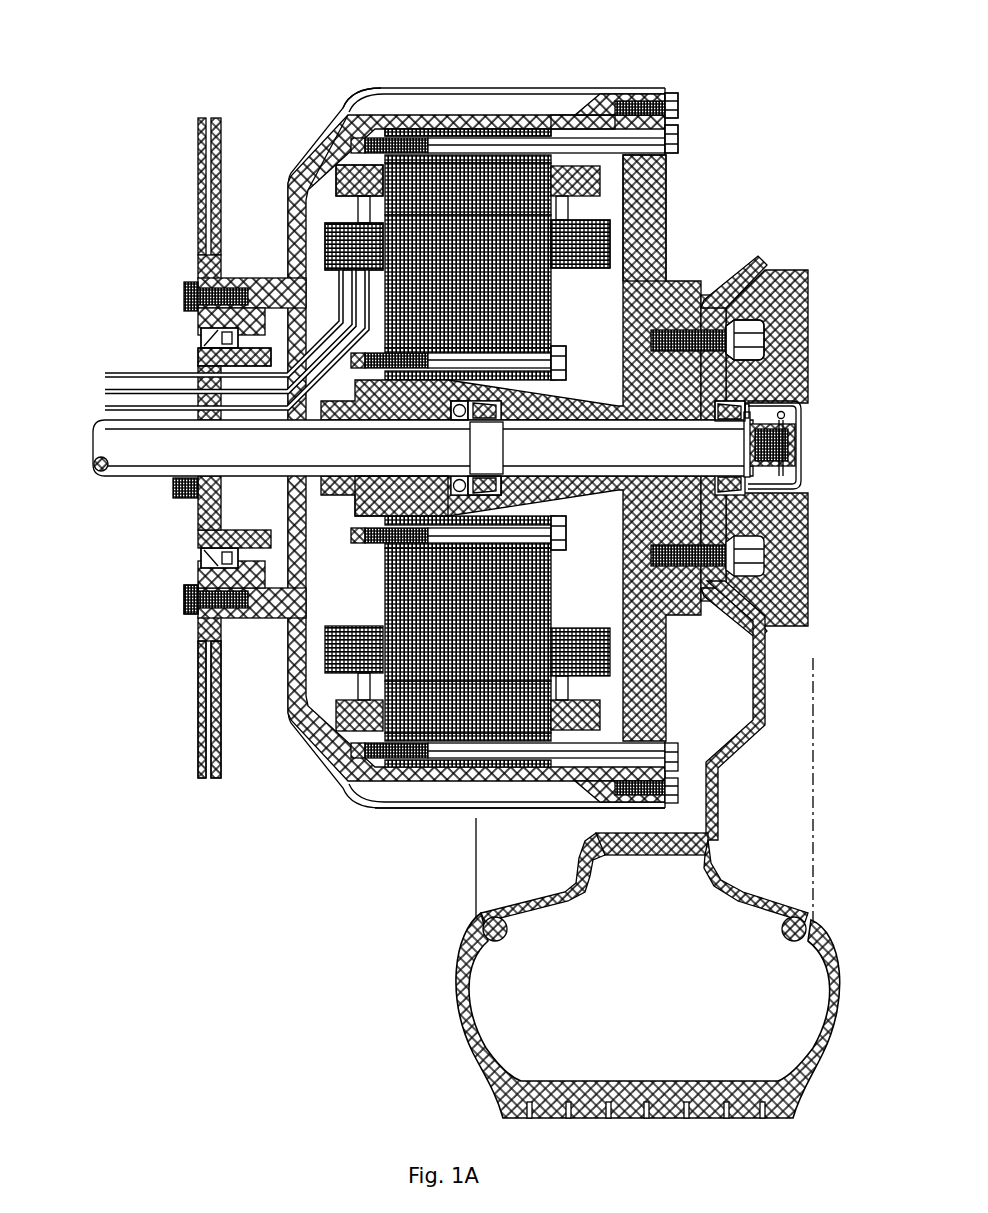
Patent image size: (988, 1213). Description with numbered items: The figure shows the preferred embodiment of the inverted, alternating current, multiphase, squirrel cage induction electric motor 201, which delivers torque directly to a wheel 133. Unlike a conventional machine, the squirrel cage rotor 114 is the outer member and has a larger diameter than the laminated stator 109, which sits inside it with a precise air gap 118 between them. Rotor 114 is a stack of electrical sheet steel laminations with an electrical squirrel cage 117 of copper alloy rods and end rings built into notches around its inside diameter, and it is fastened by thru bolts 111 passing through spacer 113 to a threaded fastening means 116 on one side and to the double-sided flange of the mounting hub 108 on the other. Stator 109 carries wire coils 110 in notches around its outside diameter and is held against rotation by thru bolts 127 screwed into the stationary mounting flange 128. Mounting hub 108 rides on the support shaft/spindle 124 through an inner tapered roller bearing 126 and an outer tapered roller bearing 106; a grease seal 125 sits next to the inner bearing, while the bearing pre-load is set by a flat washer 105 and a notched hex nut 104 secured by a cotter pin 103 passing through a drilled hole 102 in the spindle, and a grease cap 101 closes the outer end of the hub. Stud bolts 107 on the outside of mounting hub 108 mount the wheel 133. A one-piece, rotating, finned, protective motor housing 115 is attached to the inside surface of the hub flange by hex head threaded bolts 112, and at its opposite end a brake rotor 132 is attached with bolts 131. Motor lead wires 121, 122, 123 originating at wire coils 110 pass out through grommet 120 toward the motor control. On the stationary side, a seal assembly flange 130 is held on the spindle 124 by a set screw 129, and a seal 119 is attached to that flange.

The grease cap 101 is at (790, 480).
The drilled hole 102 is at (787, 438).
The cotter pin 103 is at (777, 407).
The notched hex nut 104 is at (742, 412).
The flat washer 105 is at (738, 392).
The outer tapered roller bearing 106 is at (744, 396).
The stud bolts 107 is at (745, 312).
The mounting hub 108 is at (693, 272).
The laminated stator 109 is at (546, 330).
The wire coils 110 is at (556, 262).
The thru bolt 111 is at (669, 126).
The hex head threaded bolts 112 is at (666, 88).
The spacer 113 is at (568, 112).
The squirrel cage rotor 114 is at (455, 120).
The motor housing 115 is at (342, 98).
The threaded fastening means 116 is at (352, 92).
The electrical squirrel cage 117 is at (340, 160).
The air gap 118 is at (375, 207).
The seal 119 is at (195, 333).
The grommet 120 is at (192, 352).
The motor lead wire 121 is at (97, 367).
The motor lead wire 122 is at (97, 383).
The motor lead wire 123 is at (97, 400).
The support shaft/spindle 124 is at (118, 470).
The grease seal 125 is at (447, 412).
The inner tapered roller bearing 126 is at (498, 456).
The thru bolts 127 is at (558, 538).
The stationary mounting flange 128 is at (347, 543).
The set screw 129 is at (178, 490).
The seal assembly flange 130 is at (195, 545).
The bolts 131 is at (180, 598).
The brake rotor 132 is at (190, 768).
The wheel 133 is at (445, 1000).
The induction electric motor 201 is at (366, 806).